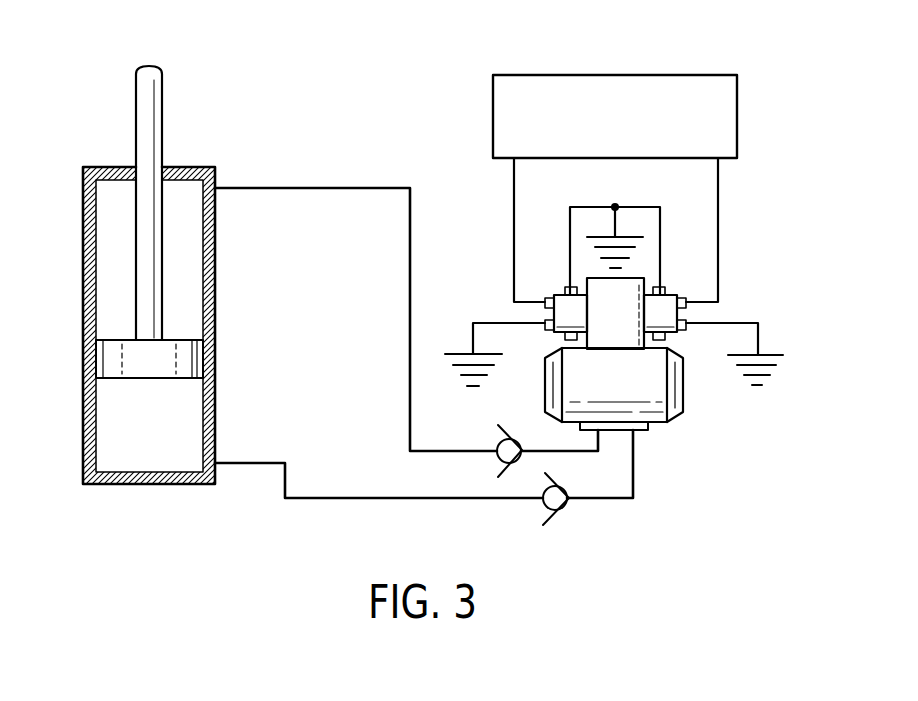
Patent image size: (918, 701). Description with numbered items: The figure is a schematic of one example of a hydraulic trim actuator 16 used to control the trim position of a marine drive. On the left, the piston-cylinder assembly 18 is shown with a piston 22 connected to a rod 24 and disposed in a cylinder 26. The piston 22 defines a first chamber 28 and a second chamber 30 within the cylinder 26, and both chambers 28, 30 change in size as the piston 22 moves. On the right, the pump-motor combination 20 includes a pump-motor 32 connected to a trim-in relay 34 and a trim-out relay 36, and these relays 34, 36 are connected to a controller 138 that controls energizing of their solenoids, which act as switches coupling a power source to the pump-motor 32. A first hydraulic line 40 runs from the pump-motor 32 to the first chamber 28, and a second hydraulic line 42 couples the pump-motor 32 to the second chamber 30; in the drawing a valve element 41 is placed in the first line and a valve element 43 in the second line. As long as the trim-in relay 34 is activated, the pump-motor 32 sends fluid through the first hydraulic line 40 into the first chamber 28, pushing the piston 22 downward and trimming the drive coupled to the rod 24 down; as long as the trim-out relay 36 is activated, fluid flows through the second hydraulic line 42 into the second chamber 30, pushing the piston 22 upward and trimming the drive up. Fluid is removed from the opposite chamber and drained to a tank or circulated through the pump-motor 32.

The hydraulic trim actuator 16 is at (423, 98).
The piston-cylinder assembly 18 is at (70, 350).
The pump-motor combination 20 is at (662, 414).
The piston 22 is at (183, 357).
The rod 24 is at (136, 120).
The cylinder 26 is at (215, 290).
The first chamber 28 is at (180, 230).
The second chamber 30 is at (180, 435).
The pump-motor 32 is at (657, 408).
The trim-in relay 34 is at (563, 317).
The trim-out relay 36 is at (668, 315).
The first hydraulic line 40 is at (308, 188).
The first check valve 41 is at (498, 443).
The second hydraulic line 42 is at (287, 478).
The second check valve 43 is at (563, 510).
The controller 138 is at (737, 118).